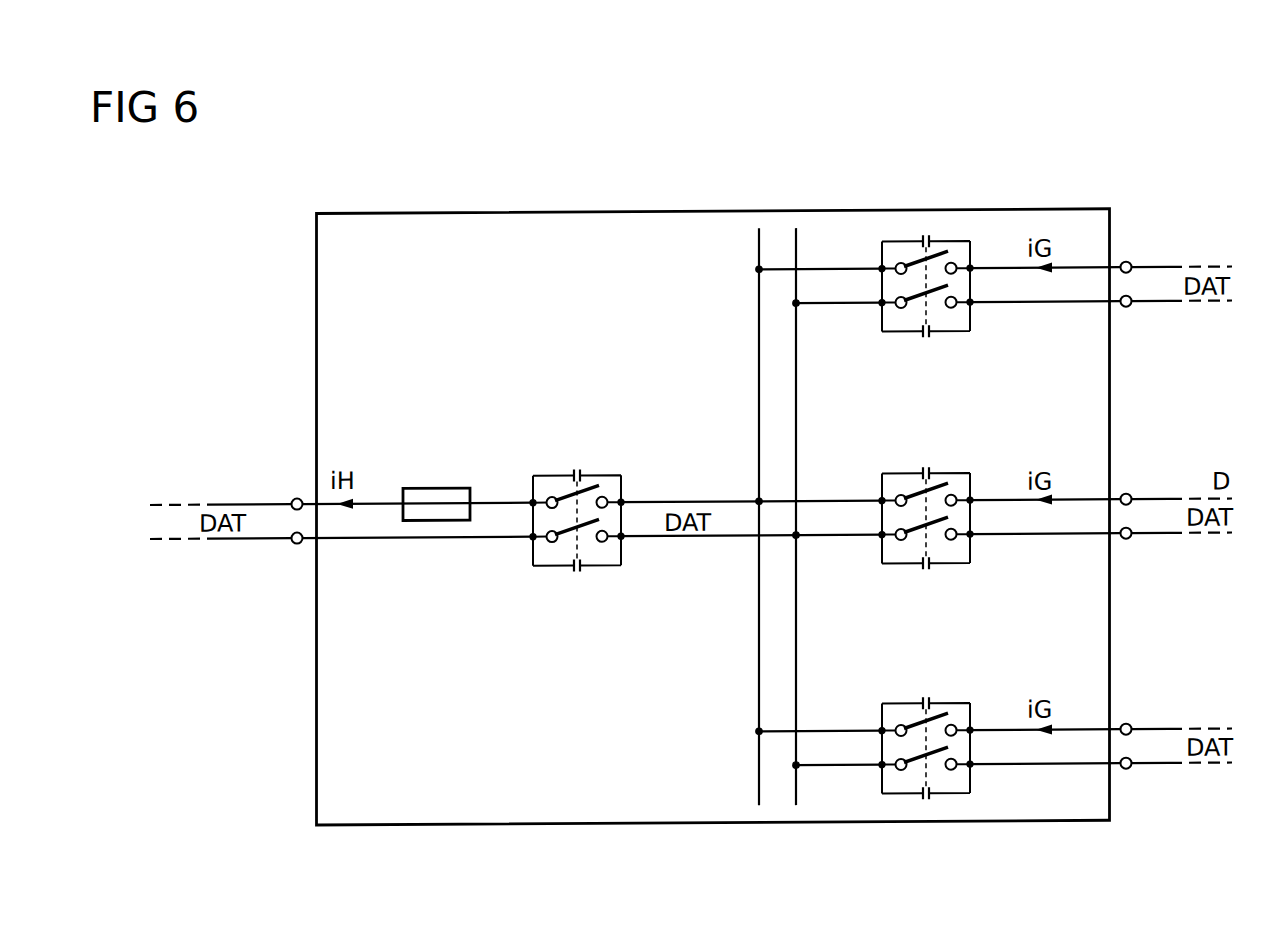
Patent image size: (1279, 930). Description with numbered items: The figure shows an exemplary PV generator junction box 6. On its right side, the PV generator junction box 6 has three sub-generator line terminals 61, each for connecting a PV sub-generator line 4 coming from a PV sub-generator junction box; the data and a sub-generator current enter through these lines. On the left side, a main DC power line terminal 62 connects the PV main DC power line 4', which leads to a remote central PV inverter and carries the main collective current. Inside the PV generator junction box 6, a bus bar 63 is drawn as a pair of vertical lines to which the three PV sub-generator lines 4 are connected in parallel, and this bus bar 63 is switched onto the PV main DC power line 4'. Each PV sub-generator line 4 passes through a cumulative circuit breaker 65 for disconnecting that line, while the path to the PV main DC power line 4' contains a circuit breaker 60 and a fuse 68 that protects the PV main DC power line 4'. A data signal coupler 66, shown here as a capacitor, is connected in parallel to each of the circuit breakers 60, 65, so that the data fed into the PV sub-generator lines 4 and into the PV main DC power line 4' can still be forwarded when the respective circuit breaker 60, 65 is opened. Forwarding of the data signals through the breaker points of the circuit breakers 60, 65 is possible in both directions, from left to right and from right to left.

The PV generator junction box 6 is at (823, 214).
The circuit breaker 60 is at (566, 495).
The sub-generator line terminal 61 is at (1126, 266).
The main DC power line terminal 62 is at (297, 498).
The bus bar 63 is at (796, 420).
The cumulative circuit breaker 65 is at (920, 304).
The data signal coupler 66 is at (930, 242).
The fuse 68 is at (437, 489).
The PV sub-generator line 4 is at (1201, 519).
The PV main DC power line 4' is at (221, 525).